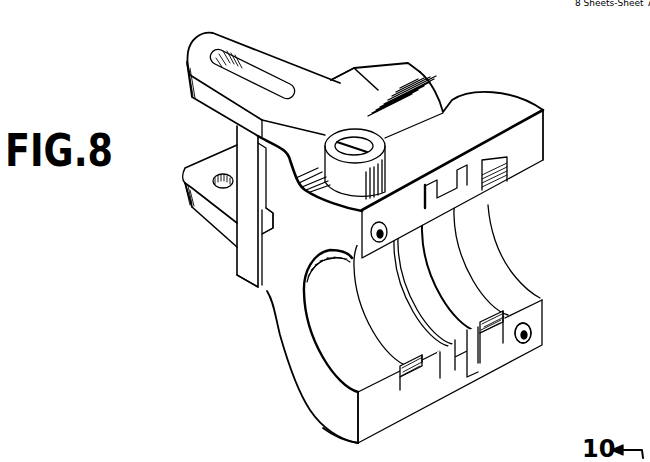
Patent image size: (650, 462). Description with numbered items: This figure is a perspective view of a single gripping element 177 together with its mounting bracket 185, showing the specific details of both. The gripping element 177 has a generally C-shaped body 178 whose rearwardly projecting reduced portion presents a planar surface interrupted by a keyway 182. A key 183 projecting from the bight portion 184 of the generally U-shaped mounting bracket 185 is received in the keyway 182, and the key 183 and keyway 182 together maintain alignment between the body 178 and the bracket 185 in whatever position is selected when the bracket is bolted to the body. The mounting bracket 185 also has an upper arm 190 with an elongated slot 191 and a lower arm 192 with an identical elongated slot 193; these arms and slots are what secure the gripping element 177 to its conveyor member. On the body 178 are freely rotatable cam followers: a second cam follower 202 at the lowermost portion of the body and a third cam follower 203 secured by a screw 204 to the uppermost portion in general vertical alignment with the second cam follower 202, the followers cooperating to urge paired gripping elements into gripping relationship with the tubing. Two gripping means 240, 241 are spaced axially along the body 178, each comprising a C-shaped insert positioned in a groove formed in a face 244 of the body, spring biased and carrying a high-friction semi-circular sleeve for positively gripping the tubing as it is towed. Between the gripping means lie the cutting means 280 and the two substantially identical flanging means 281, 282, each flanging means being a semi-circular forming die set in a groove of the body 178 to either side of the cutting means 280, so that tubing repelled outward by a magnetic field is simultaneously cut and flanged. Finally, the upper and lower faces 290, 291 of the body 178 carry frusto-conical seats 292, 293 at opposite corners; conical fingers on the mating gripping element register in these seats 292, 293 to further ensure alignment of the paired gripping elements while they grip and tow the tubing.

The gripping element 177 is at (563, 127).
The C-shaped body 178 is at (302, 264).
The keyway 182 is at (273, 230).
The key 183 is at (250, 230).
The bight portion 184 is at (235, 160).
The mounting bracket 185 is at (328, 72).
The upper arm 190 is at (273, 46).
The elongated slot 191 is at (260, 80).
The lower arm 192 is at (195, 190).
The elongated slot 193 is at (222, 188).
The second cam follower 202 is at (330, 428).
The third cam follower 203 is at (385, 163).
The screw 204 is at (372, 133).
The gripping means 240 is at (407, 388).
The gripping means 241 is at (490, 340).
The face 244 is at (320, 333).
The cutting means 280 is at (447, 386).
The flanging means 281 is at (467, 324).
The flanging means 282 is at (407, 336).
The upper face 290 is at (528, 157).
The lower face 291 is at (372, 418).
The frusto-conical seat 292 is at (328, 283).
The frusto-conical seat 293 is at (523, 334).